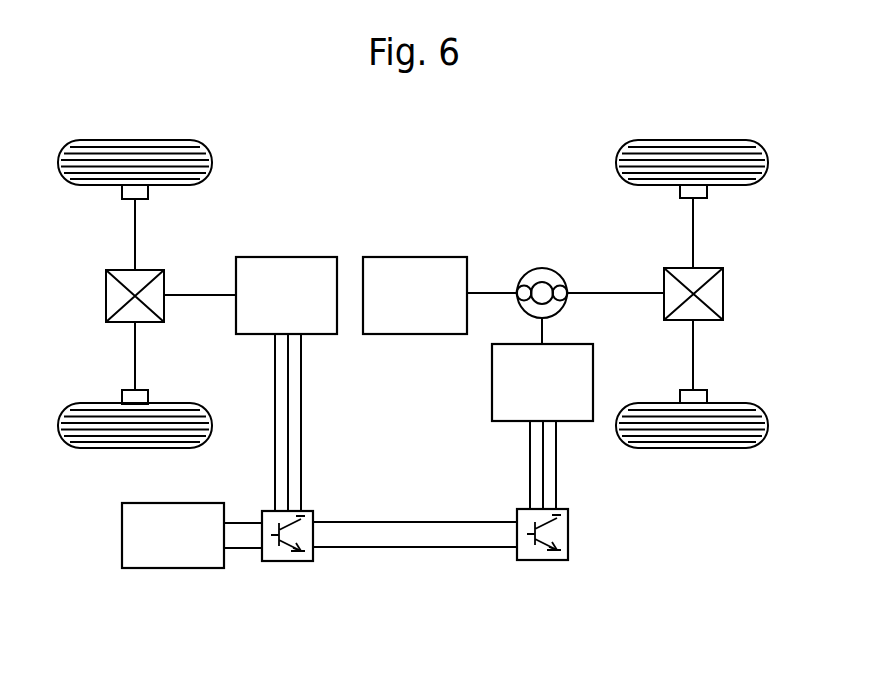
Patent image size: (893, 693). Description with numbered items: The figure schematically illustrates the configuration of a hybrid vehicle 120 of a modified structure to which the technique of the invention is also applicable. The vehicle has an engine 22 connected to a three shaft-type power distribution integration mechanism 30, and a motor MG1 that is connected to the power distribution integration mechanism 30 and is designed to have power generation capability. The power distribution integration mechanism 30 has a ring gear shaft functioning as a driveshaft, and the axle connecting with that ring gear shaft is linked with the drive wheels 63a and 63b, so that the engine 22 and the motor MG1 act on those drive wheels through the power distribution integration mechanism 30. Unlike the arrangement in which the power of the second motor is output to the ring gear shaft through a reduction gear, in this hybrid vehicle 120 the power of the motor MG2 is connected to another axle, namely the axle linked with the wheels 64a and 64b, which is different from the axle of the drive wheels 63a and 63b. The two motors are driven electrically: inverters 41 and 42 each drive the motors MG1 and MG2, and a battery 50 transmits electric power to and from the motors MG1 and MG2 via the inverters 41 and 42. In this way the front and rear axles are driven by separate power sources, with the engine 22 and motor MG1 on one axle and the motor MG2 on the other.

The hybrid vehicle 120 is at (424, 123).
The wheel 64a is at (136, 140).
The wheel 64b is at (135, 448).
The drive wheel 63a is at (693, 140).
The drive wheel 63b is at (693, 448).
The motor MG2 is at (290, 256).
The engine 22 is at (418, 256).
The power distribution integration mechanism 30 is at (541, 268).
The motor MG1 is at (492, 383).
The battery 50 is at (173, 568).
The inverter 41 is at (288, 561).
The inverter 42 is at (545, 560).